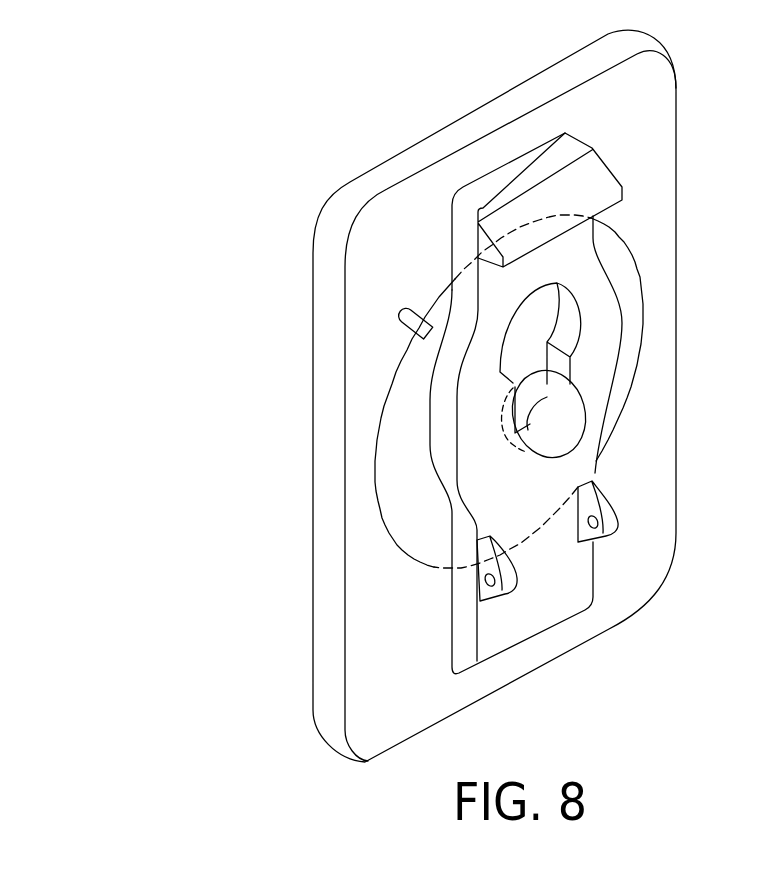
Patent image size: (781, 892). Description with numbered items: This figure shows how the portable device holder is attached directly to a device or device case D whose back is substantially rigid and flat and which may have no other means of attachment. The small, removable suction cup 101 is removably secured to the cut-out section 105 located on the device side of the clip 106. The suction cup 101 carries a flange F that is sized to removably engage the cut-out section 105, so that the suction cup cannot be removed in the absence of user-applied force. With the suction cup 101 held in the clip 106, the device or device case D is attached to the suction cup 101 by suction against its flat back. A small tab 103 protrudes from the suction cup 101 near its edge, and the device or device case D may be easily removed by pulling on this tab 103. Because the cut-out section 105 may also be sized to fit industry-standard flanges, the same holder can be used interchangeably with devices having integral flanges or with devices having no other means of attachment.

The device or device case D is at (297, 343).
The small removable suction cup 101 is at (359, 474).
The small tab 103 is at (397, 290).
The cut-out section 105 is at (587, 311).
The clip 106 is at (513, 157).
The flange F is at (593, 403).